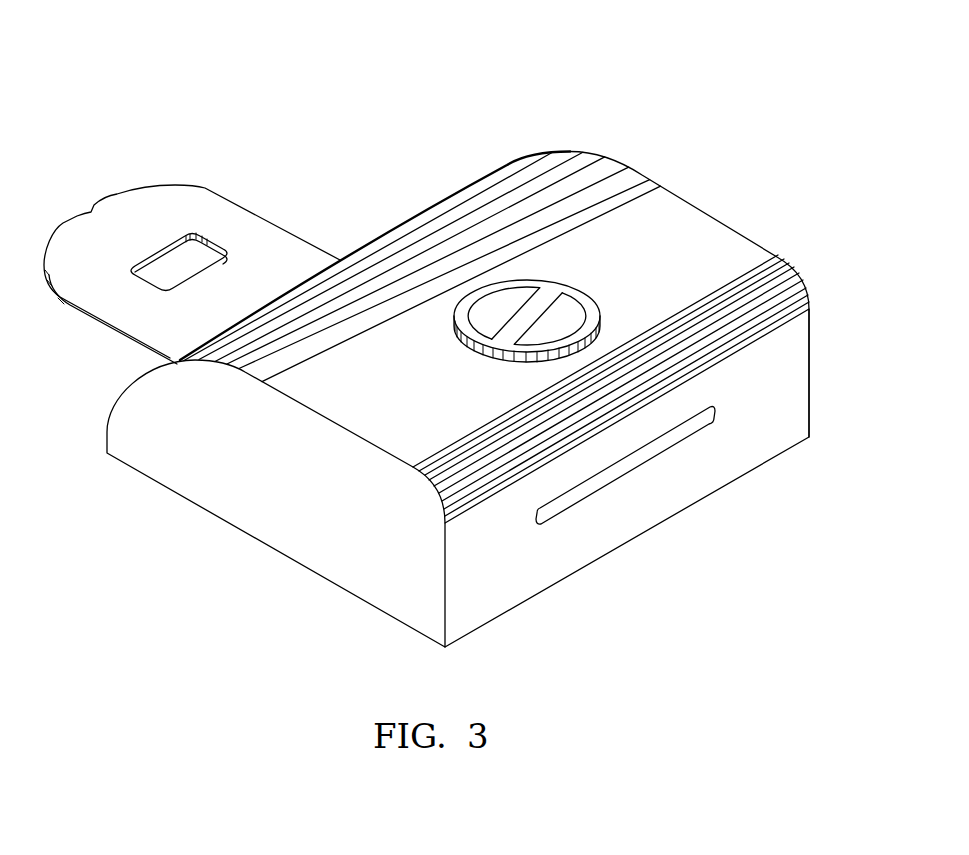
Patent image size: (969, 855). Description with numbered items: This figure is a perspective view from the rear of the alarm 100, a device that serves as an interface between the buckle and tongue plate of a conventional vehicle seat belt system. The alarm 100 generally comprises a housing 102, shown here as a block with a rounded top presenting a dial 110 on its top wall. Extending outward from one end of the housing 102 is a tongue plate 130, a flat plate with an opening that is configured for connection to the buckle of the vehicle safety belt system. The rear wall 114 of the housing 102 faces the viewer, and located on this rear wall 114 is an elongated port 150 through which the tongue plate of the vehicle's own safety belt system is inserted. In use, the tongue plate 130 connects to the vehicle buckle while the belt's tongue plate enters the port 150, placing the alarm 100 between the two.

The alarm 100 is at (434, 332).
The housing 102 is at (465, 400).
The dial 110 is at (562, 285).
The rear wall 114 is at (627, 478).
The tongue plate 130 is at (223, 193).
The port 150 is at (668, 445).